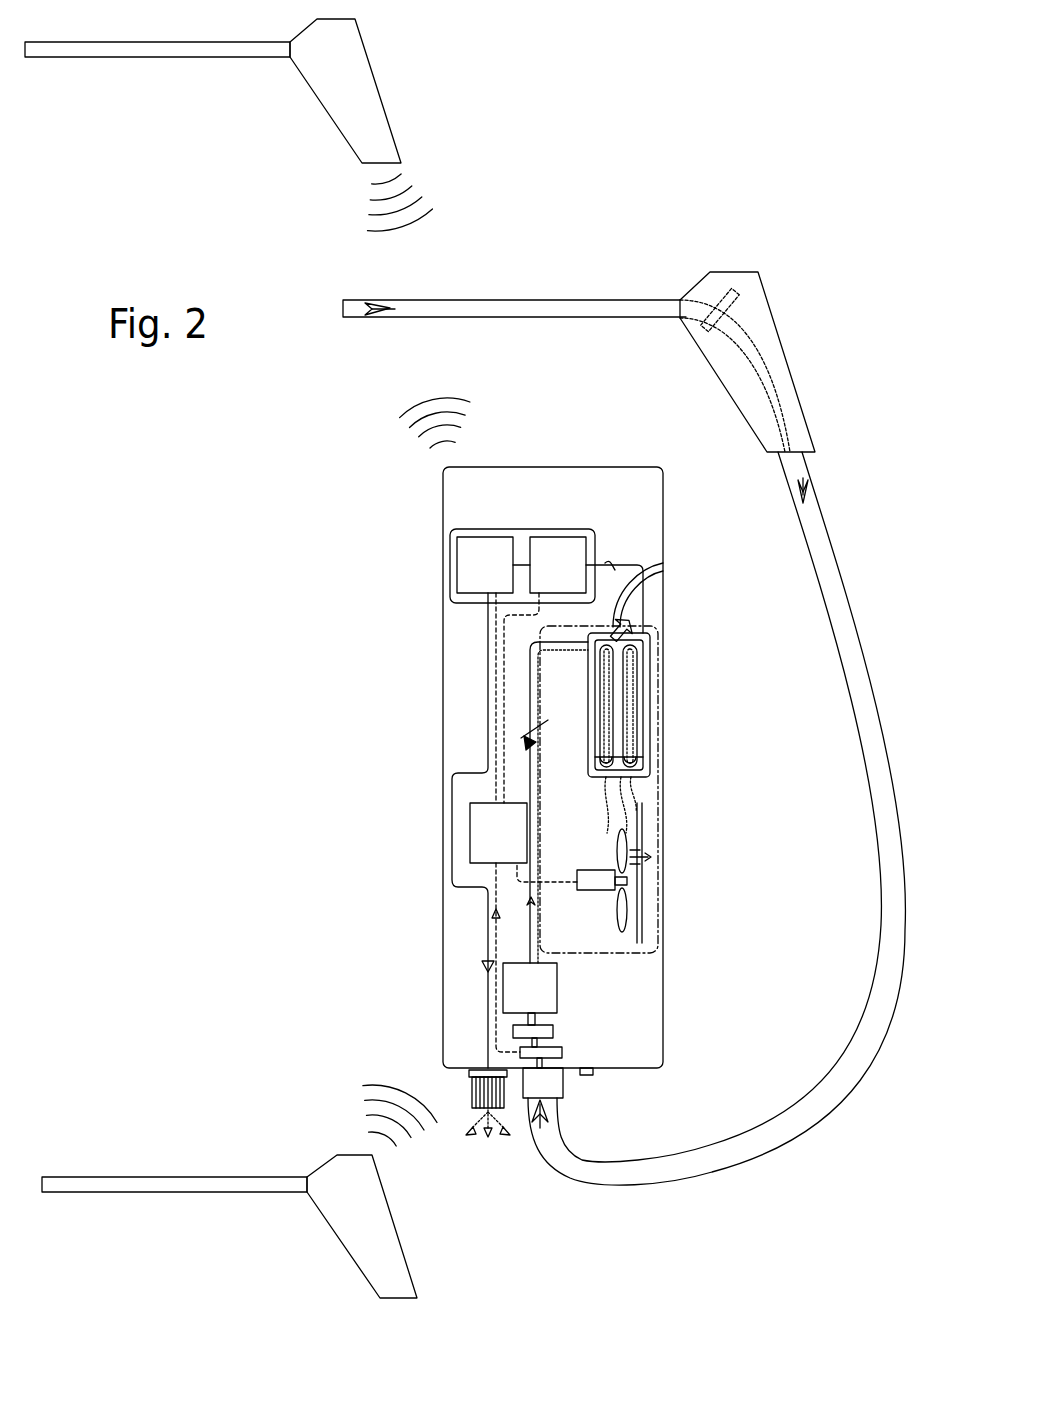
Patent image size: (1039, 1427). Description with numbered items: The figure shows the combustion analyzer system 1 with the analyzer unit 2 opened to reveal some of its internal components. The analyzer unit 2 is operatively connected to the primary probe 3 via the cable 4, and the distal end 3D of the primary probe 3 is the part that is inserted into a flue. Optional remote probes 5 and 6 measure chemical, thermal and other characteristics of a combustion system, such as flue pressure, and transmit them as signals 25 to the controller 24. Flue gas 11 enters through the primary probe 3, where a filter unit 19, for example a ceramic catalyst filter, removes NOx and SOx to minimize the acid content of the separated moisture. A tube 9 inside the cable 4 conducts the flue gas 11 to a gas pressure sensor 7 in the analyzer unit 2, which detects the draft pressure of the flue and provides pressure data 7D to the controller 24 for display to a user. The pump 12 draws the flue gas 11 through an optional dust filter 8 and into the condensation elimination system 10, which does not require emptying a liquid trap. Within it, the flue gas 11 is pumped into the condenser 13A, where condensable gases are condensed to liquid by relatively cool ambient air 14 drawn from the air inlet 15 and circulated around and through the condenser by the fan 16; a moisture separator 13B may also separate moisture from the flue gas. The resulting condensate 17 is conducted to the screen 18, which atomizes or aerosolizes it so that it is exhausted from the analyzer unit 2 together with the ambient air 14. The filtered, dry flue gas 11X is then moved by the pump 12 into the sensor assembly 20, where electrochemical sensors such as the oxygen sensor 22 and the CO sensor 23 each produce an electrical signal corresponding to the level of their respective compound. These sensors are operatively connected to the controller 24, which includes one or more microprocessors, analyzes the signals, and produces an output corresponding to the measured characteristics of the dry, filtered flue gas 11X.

The combustion analyzer system 1 is at (832, 66).
The analyzer unit 2 is at (693, 484).
The primary probe 3 is at (595, 334).
The distal end 3D is at (351, 286).
The cable 4 is at (880, 708).
The remote probe 5 is at (362, 55).
The remote probe 6 is at (393, 1190).
The gas pressure sensor 7 is at (562, 1053).
The pressure data 7D is at (490, 915).
The dust filter 8 is at (555, 1028).
The tube 9 is at (785, 418).
The condensation elimination system 10 is at (660, 716).
The flue gas 11 is at (578, 1118).
The dry filtered flue gas 11X is at (478, 1156).
The pump 12 is at (552, 993).
The condenser 13A is at (686, 665).
The moisture separator 13B is at (650, 763).
The ambient air 14 is at (630, 625).
The air inlet 15 is at (663, 569).
The fan 16 is at (590, 882).
The condensate 17 is at (662, 838).
The screen 18 is at (643, 908).
The filter unit 19 is at (735, 292).
The sensor assembly 20 is at (457, 529).
The oxygen sensor 22 is at (560, 538).
The CO sensor 23 is at (457, 569).
The controller 24 is at (470, 826).
The signals 25 is at (355, 204).